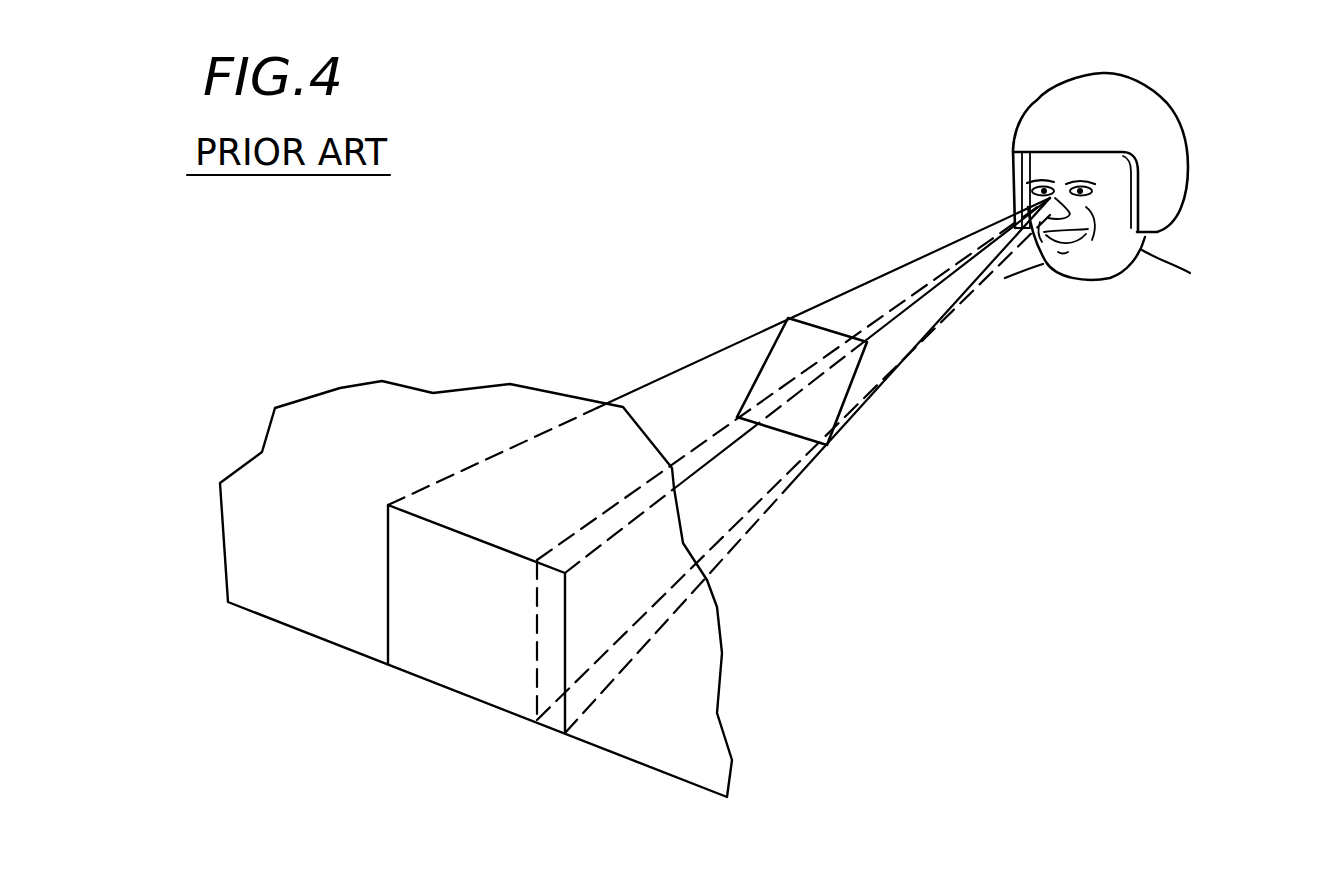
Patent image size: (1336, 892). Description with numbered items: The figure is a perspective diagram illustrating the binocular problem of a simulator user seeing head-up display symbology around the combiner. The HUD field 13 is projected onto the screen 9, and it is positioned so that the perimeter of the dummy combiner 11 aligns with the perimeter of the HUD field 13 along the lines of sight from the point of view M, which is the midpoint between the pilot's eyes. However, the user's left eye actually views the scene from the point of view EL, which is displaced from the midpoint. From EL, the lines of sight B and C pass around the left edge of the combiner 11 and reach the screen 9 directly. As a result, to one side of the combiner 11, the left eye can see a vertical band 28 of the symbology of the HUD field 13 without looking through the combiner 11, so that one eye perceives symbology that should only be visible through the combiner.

The screen 9 is at (363, 405).
The dummy combiner 11 is at (828, 331).
The HUD field 13 is at (387, 638).
The vertical band 28 is at (553, 683).
The line of sight B is at (694, 453).
The line of sight C is at (740, 517).
The point of view at the midpoint between the pilot's eyes M is at (1051, 187).
The point of view of the left eye EL is at (1110, 218).